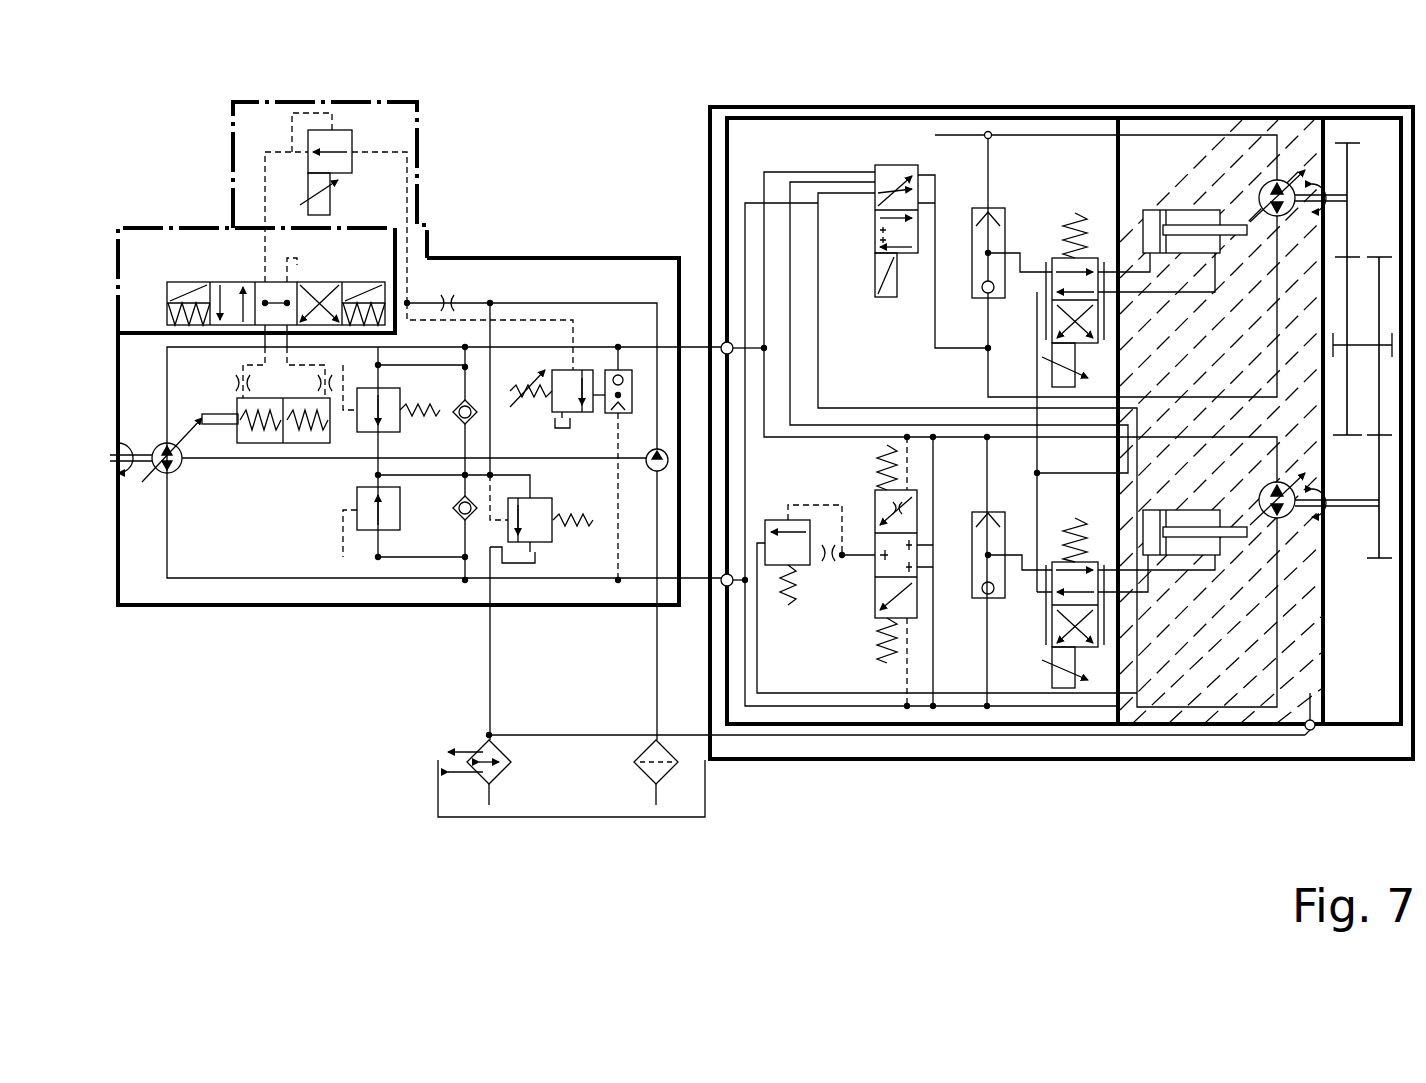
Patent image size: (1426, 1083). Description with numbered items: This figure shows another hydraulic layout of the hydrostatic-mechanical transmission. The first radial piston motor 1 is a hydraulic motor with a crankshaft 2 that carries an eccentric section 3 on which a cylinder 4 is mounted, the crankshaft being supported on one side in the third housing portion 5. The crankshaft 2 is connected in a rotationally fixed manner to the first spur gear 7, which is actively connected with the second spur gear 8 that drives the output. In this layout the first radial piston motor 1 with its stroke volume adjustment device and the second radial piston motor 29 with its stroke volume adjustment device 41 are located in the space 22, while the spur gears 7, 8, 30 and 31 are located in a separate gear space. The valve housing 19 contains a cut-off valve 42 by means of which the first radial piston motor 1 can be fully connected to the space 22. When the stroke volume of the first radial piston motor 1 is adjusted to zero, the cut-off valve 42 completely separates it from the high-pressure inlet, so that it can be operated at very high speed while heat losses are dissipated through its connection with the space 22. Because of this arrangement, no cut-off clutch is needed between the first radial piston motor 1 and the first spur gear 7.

The hydraulic radial piston motor 1 is at (1262, 183).
The crankshaft 2 is at (1055, 258).
The eccentric section 3 is at (973, 227).
The cylinder 4 is at (873, 510).
The third housing portion 5 is at (765, 520).
The first spur gear 7 is at (1330, 167).
The second spur gear 8 is at (1350, 297).
The valve housing 19 is at (918, 117).
The space 22 is at (1167, 170).
The second radial piston motor 29 is at (1275, 515).
The spur gear 30 is at (1318, 505).
The spur gear 31 is at (1378, 405).
The stroke volume adjustment device 41 is at (1180, 557).
The cut-off valve 42 is at (897, 165).